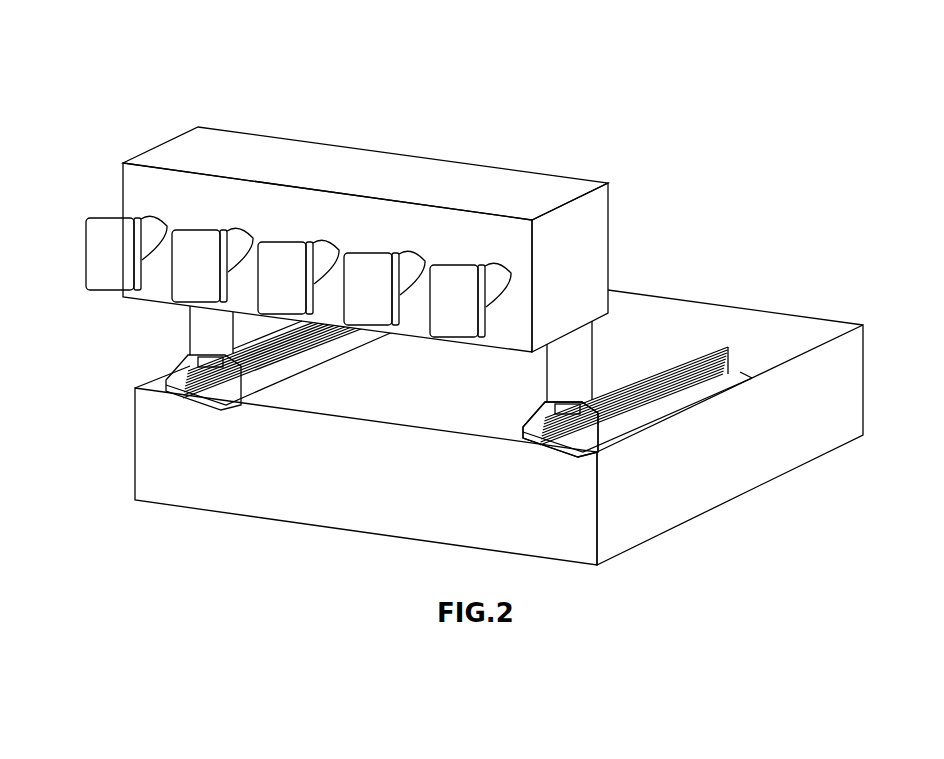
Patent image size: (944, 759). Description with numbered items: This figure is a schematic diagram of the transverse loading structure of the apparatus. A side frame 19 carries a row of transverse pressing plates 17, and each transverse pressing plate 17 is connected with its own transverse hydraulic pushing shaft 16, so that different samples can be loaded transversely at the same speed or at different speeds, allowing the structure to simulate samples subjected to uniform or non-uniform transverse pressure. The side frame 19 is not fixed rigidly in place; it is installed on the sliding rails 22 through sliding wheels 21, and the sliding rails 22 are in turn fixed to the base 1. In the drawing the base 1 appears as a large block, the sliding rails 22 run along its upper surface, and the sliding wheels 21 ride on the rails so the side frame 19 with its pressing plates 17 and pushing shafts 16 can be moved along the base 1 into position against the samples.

The base 1 is at (640, 332).
The transverse hydraulic pushing shaft 16 is at (500, 285).
The transverse pressing plate 17 is at (458, 291).
The side frame 19 is at (440, 188).
The sliding wheel 21 is at (643, 363).
The sliding rail 22 is at (717, 352).